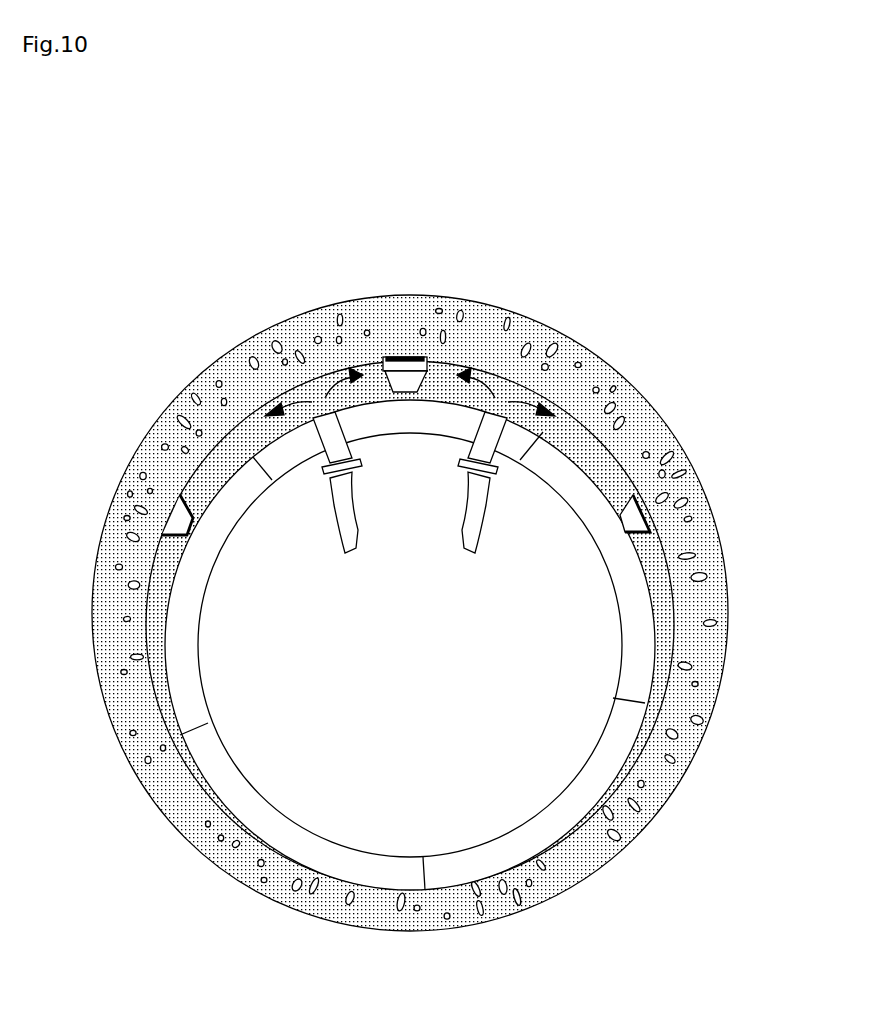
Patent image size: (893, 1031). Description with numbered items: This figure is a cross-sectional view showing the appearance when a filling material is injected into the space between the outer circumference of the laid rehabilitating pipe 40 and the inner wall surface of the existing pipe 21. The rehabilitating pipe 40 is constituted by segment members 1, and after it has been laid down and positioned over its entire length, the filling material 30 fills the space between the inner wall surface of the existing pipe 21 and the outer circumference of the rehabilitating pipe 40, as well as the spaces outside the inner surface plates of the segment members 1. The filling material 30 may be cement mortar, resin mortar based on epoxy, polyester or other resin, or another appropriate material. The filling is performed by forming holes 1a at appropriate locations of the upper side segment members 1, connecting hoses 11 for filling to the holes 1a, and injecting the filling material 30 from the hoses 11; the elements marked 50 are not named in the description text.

The segment member 1 is at (628, 665).
The hole 1a is at (488, 433).
The hose 11 is at (353, 505).
The existing pipe 21 is at (717, 540).
The filling material 30 is at (568, 437).
The rehabilitating pipe 40 is at (628, 593).
The injection nozzle 50 is at (404, 366).